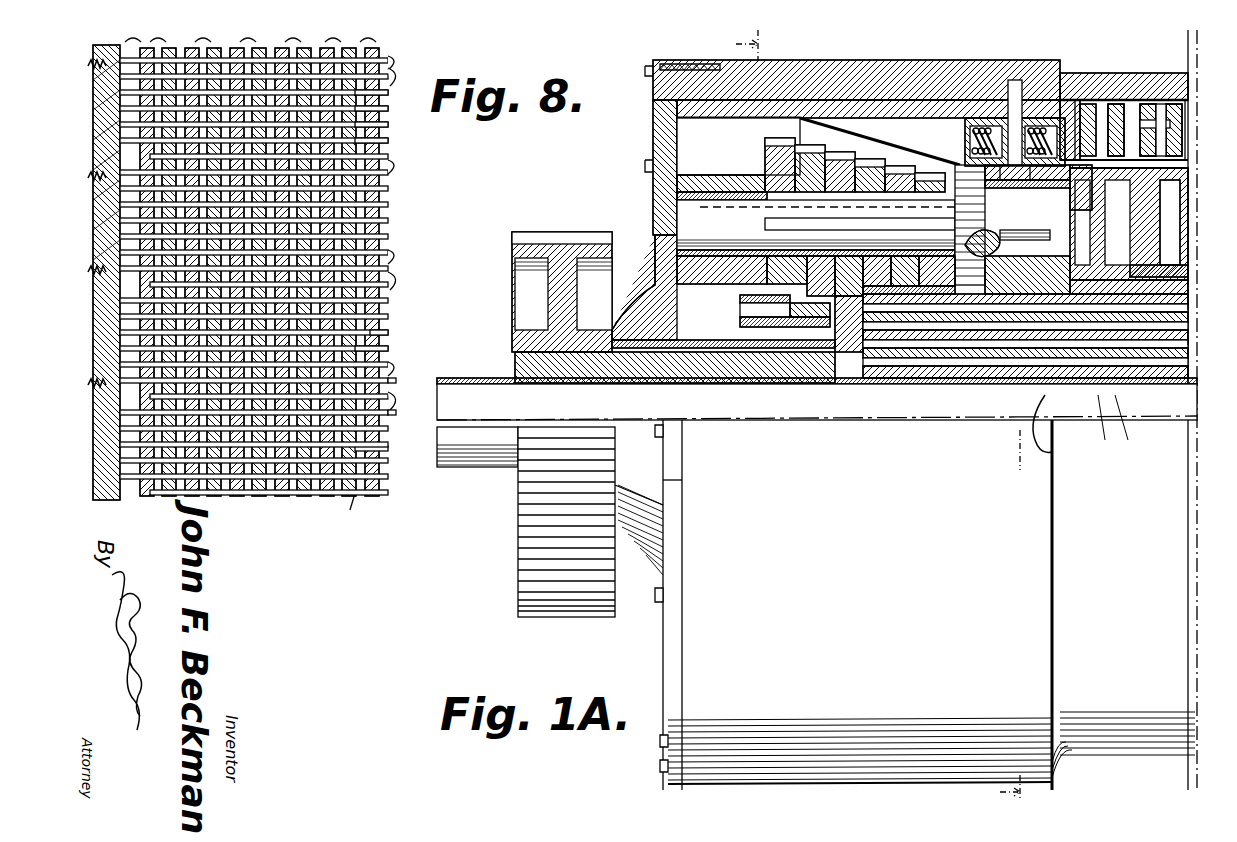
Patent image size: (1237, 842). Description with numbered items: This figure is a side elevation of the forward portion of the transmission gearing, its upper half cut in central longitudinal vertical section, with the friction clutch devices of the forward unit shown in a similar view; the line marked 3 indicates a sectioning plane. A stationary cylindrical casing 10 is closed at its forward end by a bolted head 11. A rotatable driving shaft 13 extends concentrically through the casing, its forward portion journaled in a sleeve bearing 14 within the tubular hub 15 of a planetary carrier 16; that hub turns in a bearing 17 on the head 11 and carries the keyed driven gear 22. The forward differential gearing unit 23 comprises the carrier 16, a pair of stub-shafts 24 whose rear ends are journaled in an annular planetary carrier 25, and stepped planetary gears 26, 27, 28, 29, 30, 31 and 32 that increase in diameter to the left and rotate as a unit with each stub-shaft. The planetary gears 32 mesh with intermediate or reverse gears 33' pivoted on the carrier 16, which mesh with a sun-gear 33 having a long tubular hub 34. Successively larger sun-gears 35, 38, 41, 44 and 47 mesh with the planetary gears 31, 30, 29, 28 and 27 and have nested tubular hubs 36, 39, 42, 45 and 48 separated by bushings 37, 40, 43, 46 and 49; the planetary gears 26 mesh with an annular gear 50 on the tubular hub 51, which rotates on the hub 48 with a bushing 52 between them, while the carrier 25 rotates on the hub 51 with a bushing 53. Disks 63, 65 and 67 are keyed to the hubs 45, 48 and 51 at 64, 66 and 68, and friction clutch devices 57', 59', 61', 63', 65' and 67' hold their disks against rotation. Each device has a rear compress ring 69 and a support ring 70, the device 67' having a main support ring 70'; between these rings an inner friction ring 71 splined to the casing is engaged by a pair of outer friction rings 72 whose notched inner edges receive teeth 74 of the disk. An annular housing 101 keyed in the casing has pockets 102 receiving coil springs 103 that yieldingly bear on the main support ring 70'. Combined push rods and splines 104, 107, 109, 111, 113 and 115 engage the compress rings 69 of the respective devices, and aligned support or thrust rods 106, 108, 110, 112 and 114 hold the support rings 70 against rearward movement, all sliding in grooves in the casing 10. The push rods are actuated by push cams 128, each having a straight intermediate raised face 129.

In FIG. 1A, the section line 3- 3 is at (887, 416).
In FIG. 1A, the stationary casing 10 is at (921, 410).
In FIG. 1A, the head 11 is at (663, 668).
In FIG. 1A, the driving shaft 13 is at (480, 460).
In FIG. 1A, the sleeve bearing 14 is at (515, 380).
In FIG. 1A, the tubular hub 15 is at (720, 383).
In FIG. 1A, the planetary carrier 16 is at (680, 268).
In FIG. 1A, the bearing 17 is at (660, 495).
In FIG. 1A, the driven element 22 is at (562, 612).
In FIG. 1A, the forward differential gearing unit 23 is at (815, 140).
In FIG. 1A, the stub-shafts 24 is at (816, 215).
In FIG. 1A, the annular planetary carrier 25 is at (1013, 80).
In FIG. 1A, the planetary gear 26 is at (968, 118).
In FIG. 1A, the planetary gear 27 is at (930, 172).
In FIG. 1A, the planetary gear 28 is at (900, 165).
In FIG. 1A, the planetary gear 29 is at (870, 158).
In FIG. 1A, the planetary gear 30 is at (840, 150).
In FIG. 1A, the planetary gear 31 is at (800, 116).
In FIG. 1A, the planetary gear 32 is at (765, 145).
In FIG. 1A, the sun-gear 33 is at (787, 330).
In FIG. 1A, the intermediate or reverse gears 33' is at (742, 335).
In FIG. 1A, the tubular hub 34 is at (968, 388).
In FIG. 1A, the sun-gear 35 is at (845, 387).
In FIG. 1A, the tubular hub 36 is at (1125, 383).
In FIG. 1A, the sleeves or bushings 37 is at (900, 387).
In FIG. 1A, the sun-gear 38 is at (868, 383).
In FIG. 1A, the tubular hub 39 is at (1090, 383).
In FIG. 1A, the bearing sleeves or bushings 40 is at (915, 383).
In FIG. 1A, the sun-gear 41 is at (930, 388).
In FIG. 1A, the tubular hub 42 is at (1060, 383).
In FIG. 1A, the sleeves or bushings 43 is at (1015, 388).
In FIG. 1A, the sun-gear 44 is at (985, 383).
In FIG. 1A, the tubular hub 45 is at (1188, 380).
In FIG. 1A, the bushings 46 is at (1030, 383).
In FIG. 1A, the sun-gear 47 is at (1027, 192).
In FIG. 1A, the tubular hub 48 is at (1070, 200).
In FIG. 1A, the bushings 49 is at (1188, 338).
In FIG. 1A, the annular gear 50 is at (998, 238).
In FIG. 1A, the tubular hub 51 is at (1055, 450).
In FIG. 1A, the bushing 52 is at (1137, 422).
In FIG. 1A, the bushing 53 is at (1114, 432).
In FIG. 8, the friction clutch device 57' is at (380, 279).
In FIG. 8, the friction clutch device 59' is at (331, 279).
In FIG. 8, the friction clutch device 61' is at (285, 279).
In FIG. 1A, the disk or wheel 63 is at (1147, 170).
In FIG. 8, the friction clutch device 63' is at (242, 279).
In FIG. 1A, the keyed connection 64 is at (1188, 303).
In FIG. 1A, the disk or wheel 65 is at (1187, 222).
In FIG. 8, the friction clutch device 65' is at (169, 285).
In FIG. 1A, the friction clutch device 65' is at (1158, 102).
In FIG. 1A, the keyed connection 66 is at (1188, 278).
In FIG. 1A, the disk or wheel 67 is at (1147, 224).
In FIG. 8, the friction clutch device 67' is at (139, 281).
In FIG. 1A, the friction clutch device 67' is at (1107, 102).
In FIG. 1A, the keyed connection 68 is at (1080, 233).
In FIG. 8, the rear compress ring 69 is at (390, 348).
In FIG. 1A, the rear compress ring 69 is at (1150, 140).
In FIG. 8, the support ring 70 is at (400, 350).
In FIG. 1A, the support ring 70 is at (1142, 119).
In FIG. 8, the main support ring 70' is at (224, 211).
In FIG. 1A, the main support ring 70' is at (1077, 89).
In FIG. 1A, the inner friction ring 71 is at (1088, 104).
In FIG. 1A, the outer friction rings 72 is at (1160, 162).
In FIG. 1A, the extensions or teeth 74 is at (1148, 104).
In FIG. 1A, the annular housing 101 is at (700, 118).
In FIG. 1A, the pockets or recesses 102 is at (980, 126).
In FIG. 1A, the coil springs 103 is at (1040, 126).
In FIG. 8, the combined push rods and splines 104 is at (438, 364).
In FIG. 8, the support or thrust rods 106 is at (100, 380).
In FIG. 8, the push rods 107 is at (390, 73).
In FIG. 8, the support or thrust rods 108 is at (120, 412).
In FIG. 8, the push rods 109 is at (410, 438).
In FIG. 8, the support thrust rods 110 is at (120, 428).
In FIG. 8, the push rods 111 is at (410, 454).
In FIG. 8, the support or thrust rods 112 is at (120, 444).
In FIG. 8, the push rods 113 is at (418, 480).
In FIG. 8, the support or thrust rods 114 is at (120, 476).
In FIG. 8, the push rods 115 is at (410, 504).
In FIG. 8, the push cams 128 is at (404, 400).
In FIG. 8, the straight intermediate raised face 129 is at (406, 416).